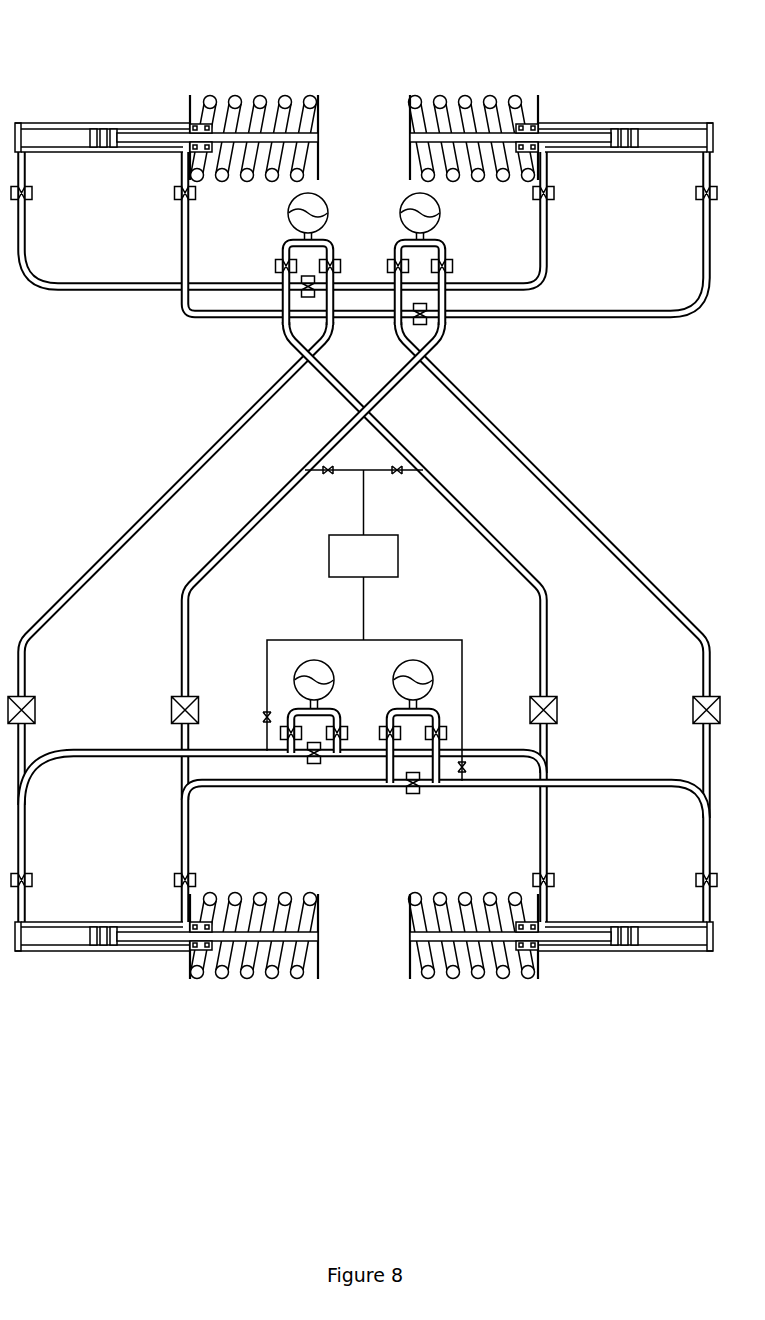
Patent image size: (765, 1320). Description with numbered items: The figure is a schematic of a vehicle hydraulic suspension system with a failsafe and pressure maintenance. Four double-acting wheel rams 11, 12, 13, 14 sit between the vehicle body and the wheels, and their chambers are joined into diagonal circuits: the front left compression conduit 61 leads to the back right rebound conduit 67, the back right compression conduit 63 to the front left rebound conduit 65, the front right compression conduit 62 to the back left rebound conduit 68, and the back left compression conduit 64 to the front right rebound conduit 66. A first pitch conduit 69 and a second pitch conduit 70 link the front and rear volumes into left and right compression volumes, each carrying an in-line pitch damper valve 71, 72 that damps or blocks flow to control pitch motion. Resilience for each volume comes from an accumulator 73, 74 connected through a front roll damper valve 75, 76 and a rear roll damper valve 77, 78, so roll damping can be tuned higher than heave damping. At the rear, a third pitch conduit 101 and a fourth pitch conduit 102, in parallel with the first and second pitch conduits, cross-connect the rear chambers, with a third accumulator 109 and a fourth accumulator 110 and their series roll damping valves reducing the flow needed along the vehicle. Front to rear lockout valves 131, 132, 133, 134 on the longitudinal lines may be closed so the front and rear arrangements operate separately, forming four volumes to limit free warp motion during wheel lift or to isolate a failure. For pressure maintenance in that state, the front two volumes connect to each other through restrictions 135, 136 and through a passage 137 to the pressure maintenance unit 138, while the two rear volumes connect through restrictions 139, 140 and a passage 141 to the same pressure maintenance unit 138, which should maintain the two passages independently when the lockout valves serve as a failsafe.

The wheel ram 11 is at (95, 78).
The wheel ram 12 is at (633, 78).
The wheel ram 13 is at (620, 1003).
The wheel ram 14 is at (100, 1003).
The front left compression conduit 61 is at (23, 224).
The front right compression conduit 62 is at (704, 225).
The back right compression conduit 63 is at (704, 853).
The back left compression conduit 64 is at (25, 853).
The front left rebound conduit 65 is at (182, 225).
The front right rebound conduit 66 is at (548, 225).
The back right rebound conduit 67 is at (549, 853).
The back left rebound conduit 68 is at (180, 851).
The first pitch conduit 69 is at (289, 296).
The second pitch conduit 70 is at (439, 320).
The pitch damper valve 71 is at (311, 297).
The pitch damper valve 72 is at (416, 323).
The accumulator 73 is at (313, 204).
The accumulator 74 is at (414, 204).
The front roll damper valve 75 is at (278, 261).
The front roll damper valve 76 is at (448, 263).
The rear roll damper valve 77 is at (393, 261).
The rear roll damper valve 78 is at (333, 259).
The third pitch conduit 101 is at (253, 748).
The fourth pitch conduit 102 is at (481, 810).
The third accumulator 109 is at (301, 669).
The fourth accumulator 110 is at (425, 669).
The front to rear lockout valve 131 is at (560, 694).
The front to rear lockout valve 132 is at (174, 695).
The front to rear lockout valve 133 is at (697, 695).
The front to rear lockout valve 134 is at (30, 694).
The restriction 135 is at (400, 477).
The restriction 136 is at (325, 477).
The passage 137 is at (360, 506).
The pressure maintenance unit 138 is at (384, 568).
The restriction 139 is at (466, 764).
The restriction 140 is at (262, 711).
The passage 141 is at (361, 626).